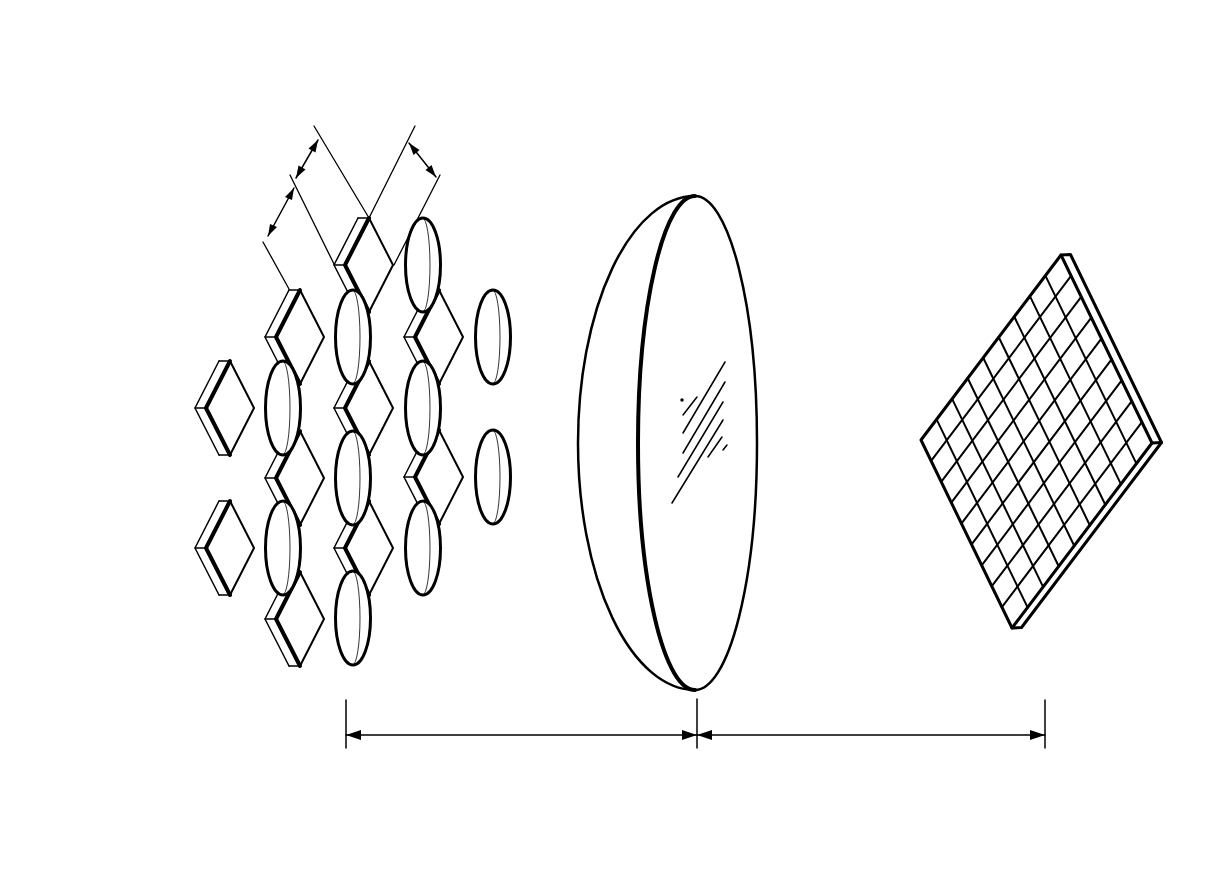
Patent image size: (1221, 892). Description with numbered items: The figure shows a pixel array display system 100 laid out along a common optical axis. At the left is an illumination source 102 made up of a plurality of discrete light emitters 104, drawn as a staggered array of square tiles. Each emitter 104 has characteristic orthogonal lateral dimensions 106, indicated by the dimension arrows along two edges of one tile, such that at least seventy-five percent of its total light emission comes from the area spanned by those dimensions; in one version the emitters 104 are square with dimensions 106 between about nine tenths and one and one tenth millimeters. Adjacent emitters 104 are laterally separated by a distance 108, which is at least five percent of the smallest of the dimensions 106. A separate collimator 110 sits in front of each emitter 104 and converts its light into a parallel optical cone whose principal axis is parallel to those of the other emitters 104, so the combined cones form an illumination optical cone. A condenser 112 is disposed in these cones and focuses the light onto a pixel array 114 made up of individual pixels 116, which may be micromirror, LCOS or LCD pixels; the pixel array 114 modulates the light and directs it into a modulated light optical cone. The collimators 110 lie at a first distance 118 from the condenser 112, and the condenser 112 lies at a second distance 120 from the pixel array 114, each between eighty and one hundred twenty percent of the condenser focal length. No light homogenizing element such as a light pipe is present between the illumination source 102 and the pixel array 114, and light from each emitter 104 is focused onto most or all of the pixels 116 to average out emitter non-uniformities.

The display system 100 is at (250, 100).
The illumination source 102 is at (250, 716).
The light emitter 104 is at (280, 310).
The characteristic lateral dimensions 106 is at (304, 162).
The distance 108 is at (281, 213).
The collimator 110 is at (506, 310).
The condenser 112 is at (742, 267).
The pixel array 114 is at (1118, 347).
The pixel 116 is at (1057, 272).
The first distance 118 is at (522, 735).
The second distance 120 is at (873, 735).